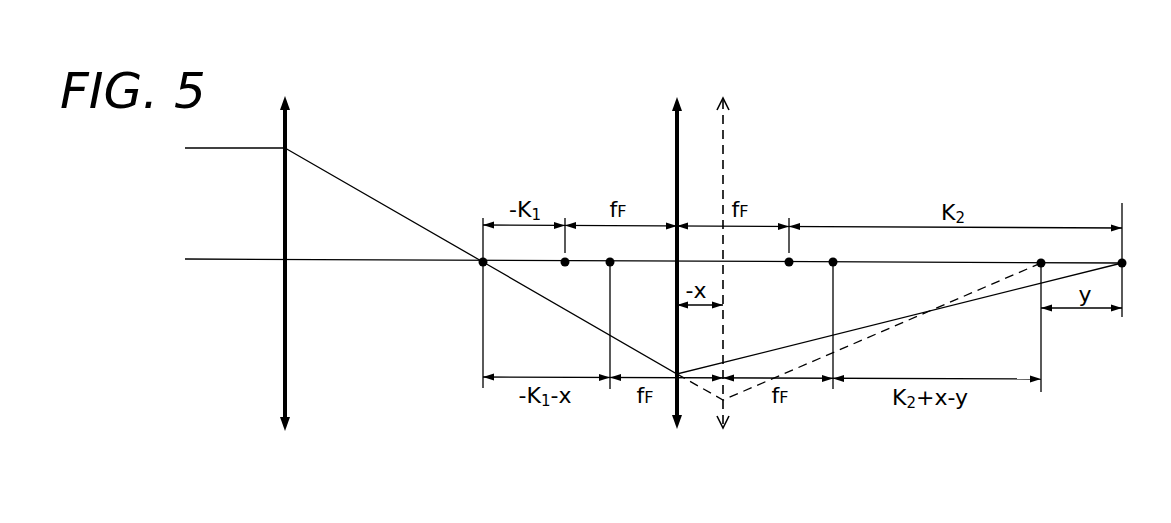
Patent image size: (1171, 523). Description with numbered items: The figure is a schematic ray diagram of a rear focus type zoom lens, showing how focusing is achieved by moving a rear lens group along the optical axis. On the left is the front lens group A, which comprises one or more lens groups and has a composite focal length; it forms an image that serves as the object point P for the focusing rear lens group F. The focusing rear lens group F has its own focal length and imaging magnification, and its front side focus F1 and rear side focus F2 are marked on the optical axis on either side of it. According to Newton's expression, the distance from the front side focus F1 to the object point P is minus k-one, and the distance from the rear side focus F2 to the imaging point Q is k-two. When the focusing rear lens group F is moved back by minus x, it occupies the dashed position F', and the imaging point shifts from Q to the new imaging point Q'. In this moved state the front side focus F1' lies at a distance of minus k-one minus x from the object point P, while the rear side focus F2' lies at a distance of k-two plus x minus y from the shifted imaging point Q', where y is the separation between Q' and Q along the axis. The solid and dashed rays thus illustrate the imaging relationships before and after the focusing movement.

The front lens group A is at (284, 249).
The focusing rear lens group F is at (677, 249).
The focusing rear lens group after movement F' is at (723, 249).
The object point P is at (491, 303).
The front side focus F1 is at (577, 242).
The front side focus after movement F1' is at (625, 312).
The rear side focus F2 is at (801, 242).
The rear side focus after movement F2' is at (848, 312).
The shifted imaging point Q' is at (1053, 314).
The imaging point Q is at (1131, 260).